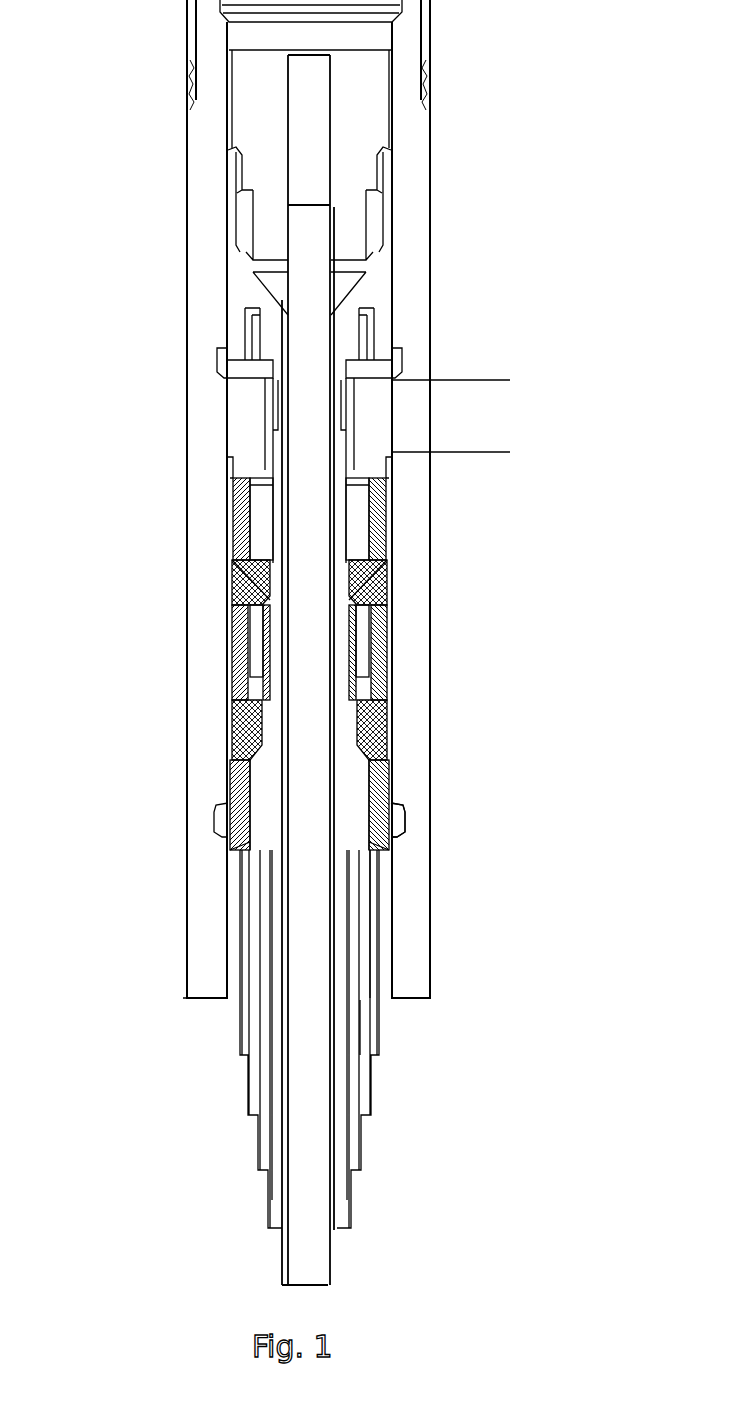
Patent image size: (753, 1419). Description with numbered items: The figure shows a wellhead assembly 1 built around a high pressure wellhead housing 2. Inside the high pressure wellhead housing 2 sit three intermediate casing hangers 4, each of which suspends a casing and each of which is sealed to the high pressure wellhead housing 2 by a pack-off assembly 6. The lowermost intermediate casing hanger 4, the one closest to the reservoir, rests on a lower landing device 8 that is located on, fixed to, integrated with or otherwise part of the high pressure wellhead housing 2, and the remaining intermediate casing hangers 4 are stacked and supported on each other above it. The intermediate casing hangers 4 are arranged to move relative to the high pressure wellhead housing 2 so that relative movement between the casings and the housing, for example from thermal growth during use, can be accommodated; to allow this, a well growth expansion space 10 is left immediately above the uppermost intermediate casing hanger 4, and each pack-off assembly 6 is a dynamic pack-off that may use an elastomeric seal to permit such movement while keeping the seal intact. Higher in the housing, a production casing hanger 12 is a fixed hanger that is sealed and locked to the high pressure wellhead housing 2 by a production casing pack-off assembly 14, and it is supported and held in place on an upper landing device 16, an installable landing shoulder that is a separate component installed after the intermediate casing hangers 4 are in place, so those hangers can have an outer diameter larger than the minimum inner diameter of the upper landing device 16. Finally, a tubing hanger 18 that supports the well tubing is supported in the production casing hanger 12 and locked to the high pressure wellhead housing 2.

The wellhead assembly 1 is at (582, 60).
The high pressure wellhead housing 2 is at (408, 273).
The intermediate casing hanger 4 is at (387, 535).
The pack-off assembly 6 is at (227, 467).
The lower landing device 8 is at (397, 815).
The well growth expansion space 10 is at (505, 380).
The production casing hanger 12 is at (242, 237).
The production casing pack-off assembly 14 is at (228, 158).
The upper landing device 16 is at (233, 315).
The tubing hanger 18 is at (255, 88).